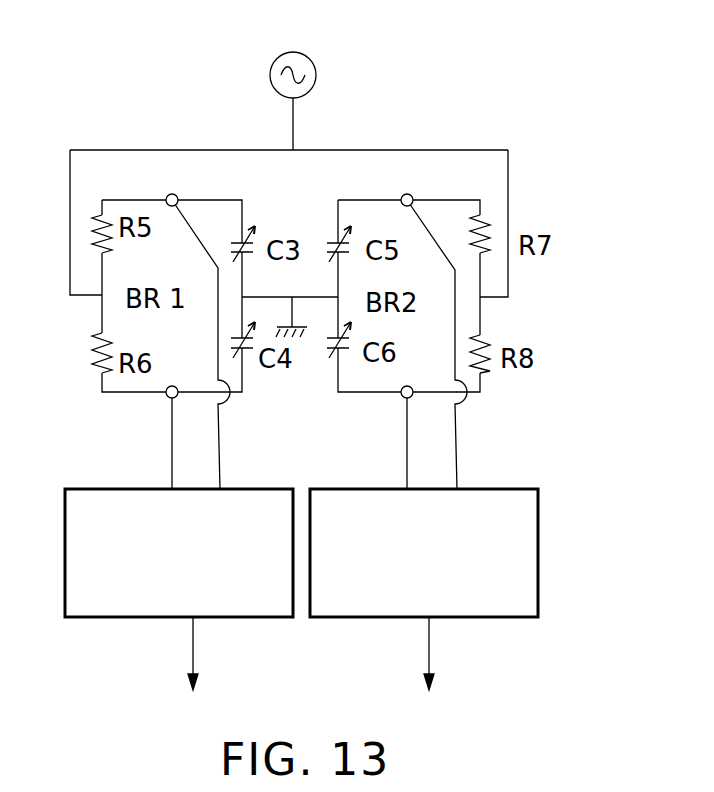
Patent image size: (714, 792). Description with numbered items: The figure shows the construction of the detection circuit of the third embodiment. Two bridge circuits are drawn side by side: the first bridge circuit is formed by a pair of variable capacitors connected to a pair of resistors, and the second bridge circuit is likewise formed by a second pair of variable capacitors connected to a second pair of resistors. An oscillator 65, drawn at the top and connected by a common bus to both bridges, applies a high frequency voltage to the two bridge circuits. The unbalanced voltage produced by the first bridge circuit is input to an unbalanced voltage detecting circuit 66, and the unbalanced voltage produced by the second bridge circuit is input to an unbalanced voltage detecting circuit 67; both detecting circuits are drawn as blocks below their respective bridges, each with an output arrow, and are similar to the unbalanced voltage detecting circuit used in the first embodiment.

The oscillator 65 is at (315, 80).
The unbalanced voltage detecting circuit 66 is at (100, 489).
The unbalanced voltage detecting circuit 67 is at (538, 502).